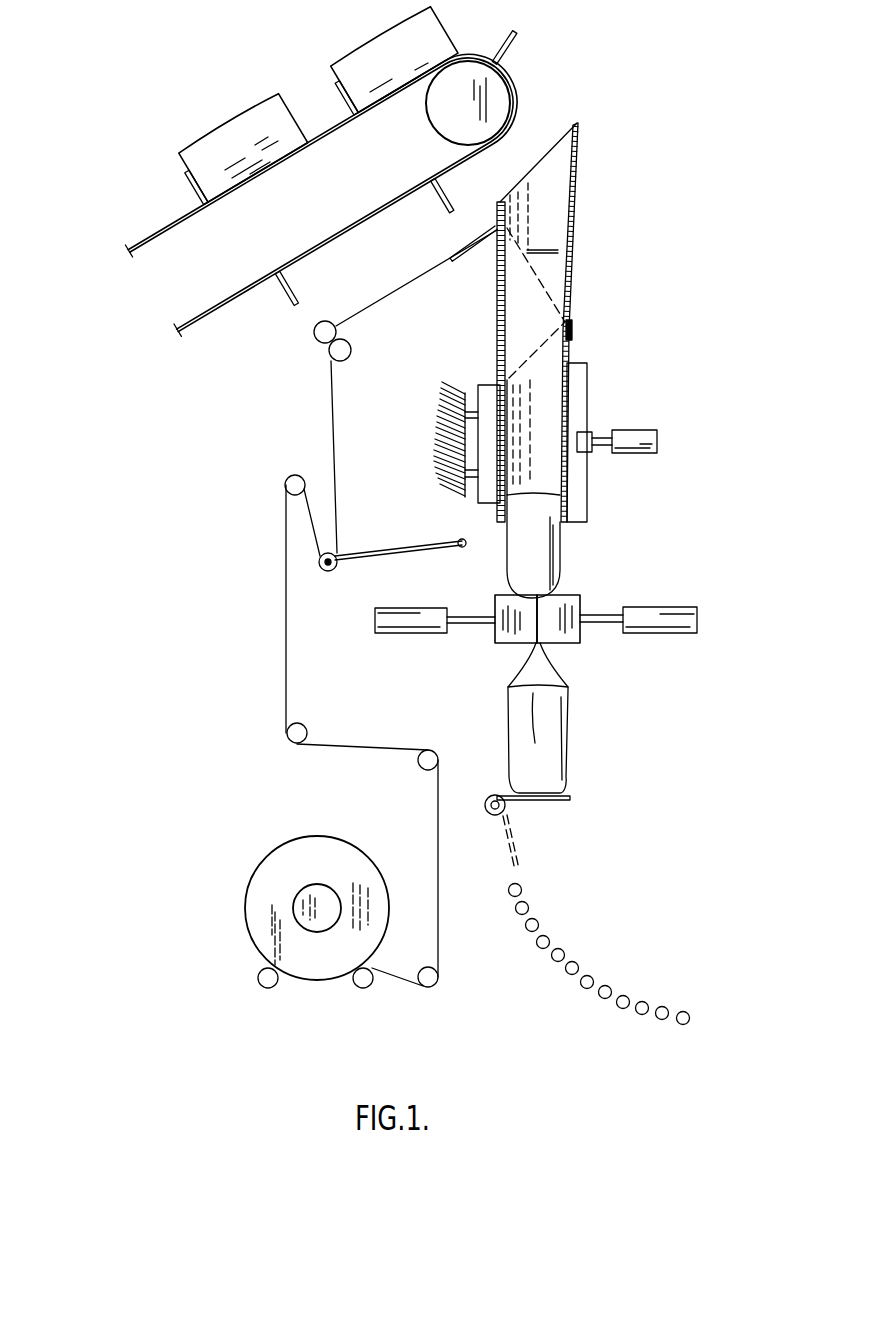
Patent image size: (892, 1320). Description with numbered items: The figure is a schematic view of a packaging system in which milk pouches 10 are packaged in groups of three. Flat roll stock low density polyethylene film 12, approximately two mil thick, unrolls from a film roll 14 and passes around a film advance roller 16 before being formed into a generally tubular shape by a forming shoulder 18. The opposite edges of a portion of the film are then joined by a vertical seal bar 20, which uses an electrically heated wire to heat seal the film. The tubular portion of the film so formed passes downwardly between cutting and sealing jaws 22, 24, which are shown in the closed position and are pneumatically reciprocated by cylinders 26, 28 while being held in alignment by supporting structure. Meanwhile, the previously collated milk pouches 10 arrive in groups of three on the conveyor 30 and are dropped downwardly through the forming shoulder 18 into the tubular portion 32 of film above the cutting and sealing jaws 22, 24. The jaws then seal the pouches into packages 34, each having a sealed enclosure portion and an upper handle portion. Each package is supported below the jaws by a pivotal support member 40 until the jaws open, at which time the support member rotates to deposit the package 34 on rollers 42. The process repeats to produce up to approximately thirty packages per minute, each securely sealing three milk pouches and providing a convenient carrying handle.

The milk pouches 10 is at (352, 54).
The conveyor 30 is at (164, 226).
The film 12 is at (284, 584).
The film roll 14 is at (245, 917).
The film advance roller 16 is at (328, 577).
The forming shoulder 18 is at (573, 330).
The vertical seal bar 20 is at (587, 400).
The cutting and sealing jaw 22 is at (573, 643).
The cutting and sealing jaw 24 is at (505, 645).
The cylinder 26 is at (677, 635).
The cylinder 28 is at (412, 637).
The tubular portion 32 is at (565, 550).
The package 34 is at (567, 745).
The pivotal support member 40 is at (570, 802).
The rollers 42 is at (585, 989).